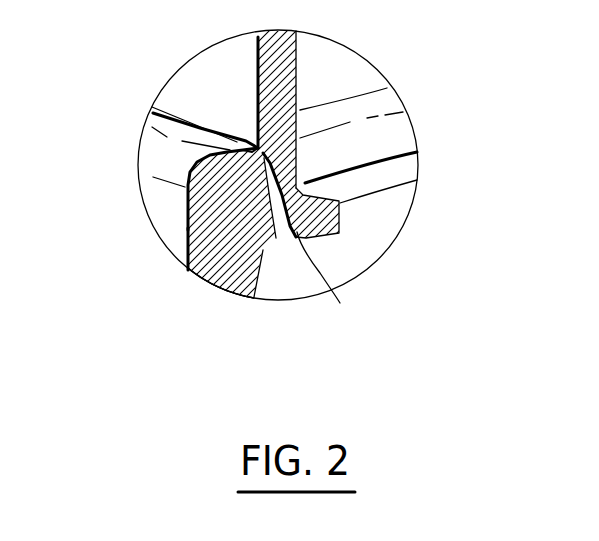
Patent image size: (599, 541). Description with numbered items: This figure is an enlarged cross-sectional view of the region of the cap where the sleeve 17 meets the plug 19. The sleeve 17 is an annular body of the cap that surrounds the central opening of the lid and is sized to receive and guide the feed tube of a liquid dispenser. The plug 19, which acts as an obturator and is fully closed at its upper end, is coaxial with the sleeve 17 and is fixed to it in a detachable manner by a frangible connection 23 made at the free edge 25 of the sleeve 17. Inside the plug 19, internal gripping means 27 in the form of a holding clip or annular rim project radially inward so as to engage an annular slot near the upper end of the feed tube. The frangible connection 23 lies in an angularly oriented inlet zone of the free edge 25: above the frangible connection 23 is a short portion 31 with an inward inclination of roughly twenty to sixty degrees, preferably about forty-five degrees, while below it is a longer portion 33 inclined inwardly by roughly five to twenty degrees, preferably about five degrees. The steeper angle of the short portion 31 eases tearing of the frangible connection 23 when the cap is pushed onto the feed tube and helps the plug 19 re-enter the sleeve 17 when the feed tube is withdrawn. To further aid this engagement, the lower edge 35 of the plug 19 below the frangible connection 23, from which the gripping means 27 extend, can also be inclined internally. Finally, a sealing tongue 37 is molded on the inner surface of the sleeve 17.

The sleeve 17 is at (187, 260).
The plug 19 is at (297, 77).
The frangible connection 23 is at (187, 200).
The free edge 25 is at (237, 143).
The internal gripping means 27 is at (343, 215).
The short portion 31 is at (250, 137).
The longer portion 33 is at (276, 240).
The lower edge 35 is at (285, 235).
The sealing tongue 37 is at (277, 291).